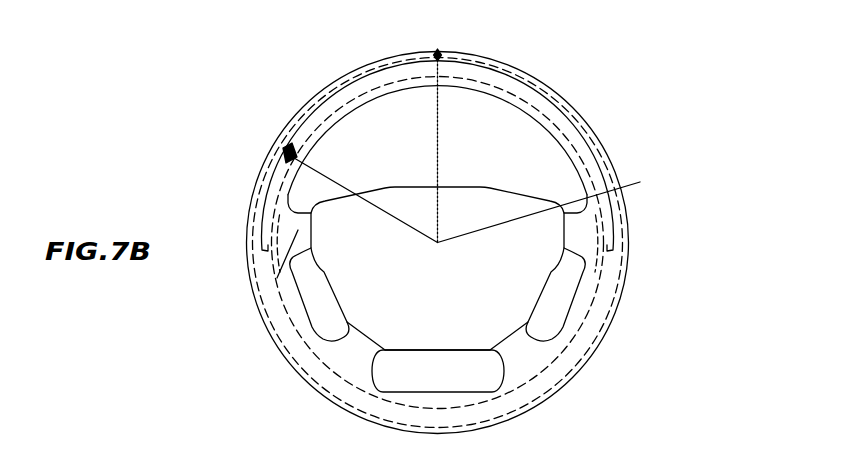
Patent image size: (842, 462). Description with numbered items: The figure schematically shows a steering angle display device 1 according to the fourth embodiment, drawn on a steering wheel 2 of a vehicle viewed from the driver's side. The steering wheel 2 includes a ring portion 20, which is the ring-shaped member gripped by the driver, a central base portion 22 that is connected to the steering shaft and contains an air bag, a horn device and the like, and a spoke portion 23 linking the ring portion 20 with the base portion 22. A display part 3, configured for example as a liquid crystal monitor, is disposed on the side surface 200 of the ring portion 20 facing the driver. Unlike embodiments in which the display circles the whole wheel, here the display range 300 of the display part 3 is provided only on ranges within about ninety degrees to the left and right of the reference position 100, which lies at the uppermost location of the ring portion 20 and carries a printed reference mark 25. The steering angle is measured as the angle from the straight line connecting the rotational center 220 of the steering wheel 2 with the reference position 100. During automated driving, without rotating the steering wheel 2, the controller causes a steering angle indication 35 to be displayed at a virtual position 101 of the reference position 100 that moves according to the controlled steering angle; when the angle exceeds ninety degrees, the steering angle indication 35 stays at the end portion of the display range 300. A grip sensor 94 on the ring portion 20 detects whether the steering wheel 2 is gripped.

The steering angle display device 1 is at (738, 67).
The steering wheel 2 is at (607, 138).
The ring portion 20 is at (613, 163).
The side surface 200 is at (628, 262).
The display part 3 is at (617, 238).
The display range 300 is at (345, 96).
The grip sensor 94 is at (598, 338).
The base portion 22 is at (520, 282).
The spoke portion 23 is at (357, 355).
The reference position 100 is at (437, 53).
The reference mark 25 is at (437, 57).
The virtual position 101 is at (284, 149).
The steering angle indication 35 is at (284, 156).
The rotational center 220 is at (561, 206).